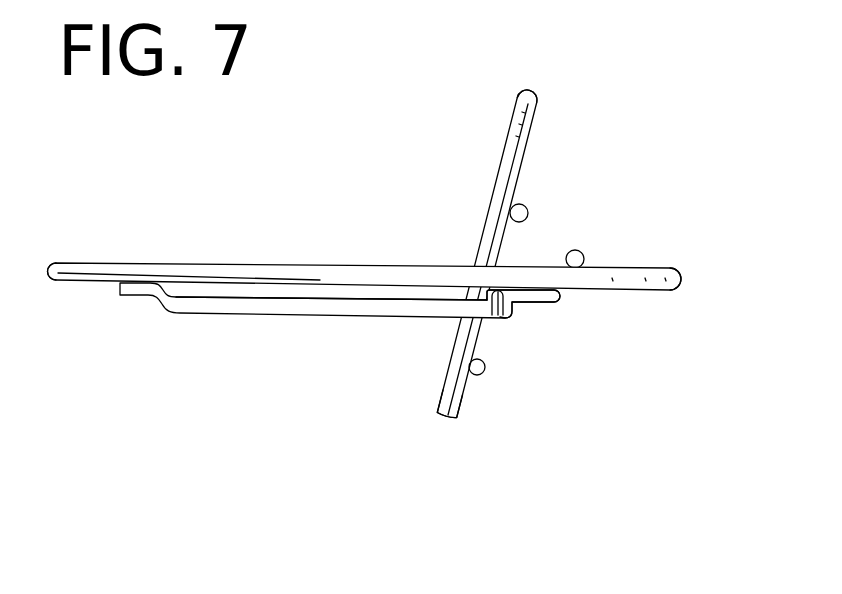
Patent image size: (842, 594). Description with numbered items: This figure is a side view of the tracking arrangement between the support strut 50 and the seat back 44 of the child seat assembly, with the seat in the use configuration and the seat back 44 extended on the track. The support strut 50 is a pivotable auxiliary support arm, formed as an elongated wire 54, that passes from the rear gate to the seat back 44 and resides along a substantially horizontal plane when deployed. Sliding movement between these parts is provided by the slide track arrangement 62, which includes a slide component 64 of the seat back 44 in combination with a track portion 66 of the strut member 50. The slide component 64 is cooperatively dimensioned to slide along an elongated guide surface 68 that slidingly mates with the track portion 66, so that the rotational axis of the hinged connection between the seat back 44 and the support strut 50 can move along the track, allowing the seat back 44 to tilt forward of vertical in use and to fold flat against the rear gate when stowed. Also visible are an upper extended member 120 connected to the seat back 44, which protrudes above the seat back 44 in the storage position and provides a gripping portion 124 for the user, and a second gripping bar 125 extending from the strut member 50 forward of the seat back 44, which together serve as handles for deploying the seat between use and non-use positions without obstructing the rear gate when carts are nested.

The seat back 44 is at (455, 393).
The support strut 50 is at (52, 272).
The elongated wire 54 is at (92, 265).
The slide track arrangement 62 is at (376, 197).
The slide component 64 is at (517, 298).
The track portion 66 is at (187, 307).
The guide surface 68 is at (272, 300).
The upper extended member 120 is at (512, 173).
The gripping portion 124 is at (531, 103).
The second gripping bar 125 is at (683, 278).